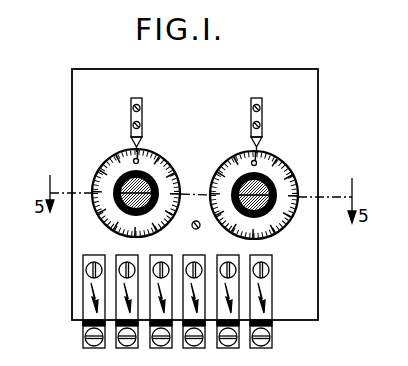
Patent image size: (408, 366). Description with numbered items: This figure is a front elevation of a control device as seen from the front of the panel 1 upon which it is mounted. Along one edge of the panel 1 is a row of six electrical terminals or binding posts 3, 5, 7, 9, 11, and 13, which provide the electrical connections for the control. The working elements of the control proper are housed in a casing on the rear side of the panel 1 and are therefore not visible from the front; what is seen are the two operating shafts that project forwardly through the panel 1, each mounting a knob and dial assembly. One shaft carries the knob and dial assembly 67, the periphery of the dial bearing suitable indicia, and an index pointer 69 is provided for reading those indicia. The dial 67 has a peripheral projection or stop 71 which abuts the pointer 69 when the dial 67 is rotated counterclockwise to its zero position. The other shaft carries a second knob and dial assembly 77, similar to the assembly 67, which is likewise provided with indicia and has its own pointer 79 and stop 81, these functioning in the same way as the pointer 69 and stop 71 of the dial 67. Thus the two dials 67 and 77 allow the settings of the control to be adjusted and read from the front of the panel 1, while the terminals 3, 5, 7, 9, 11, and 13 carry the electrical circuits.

The panel 1 is at (314, 131).
The electrical terminal or binding post 3 is at (84, 342).
The electrical terminal or binding post 5 is at (125, 348).
The electrical terminal or binding post 7 is at (164, 348).
The electrical terminal or binding post 9 is at (196, 348).
The electrical terminal or binding post 11 is at (238, 348).
The electrical terminal or binding post 13 is at (272, 345).
The knob and dial assembly 67 is at (288, 229).
The index pointer 69 is at (262, 121).
The peripheral projection or stop 71 is at (263, 148).
The knob and dial assembly 77 is at (165, 170).
The pointer 79 is at (143, 113).
The stop 81 is at (143, 144).